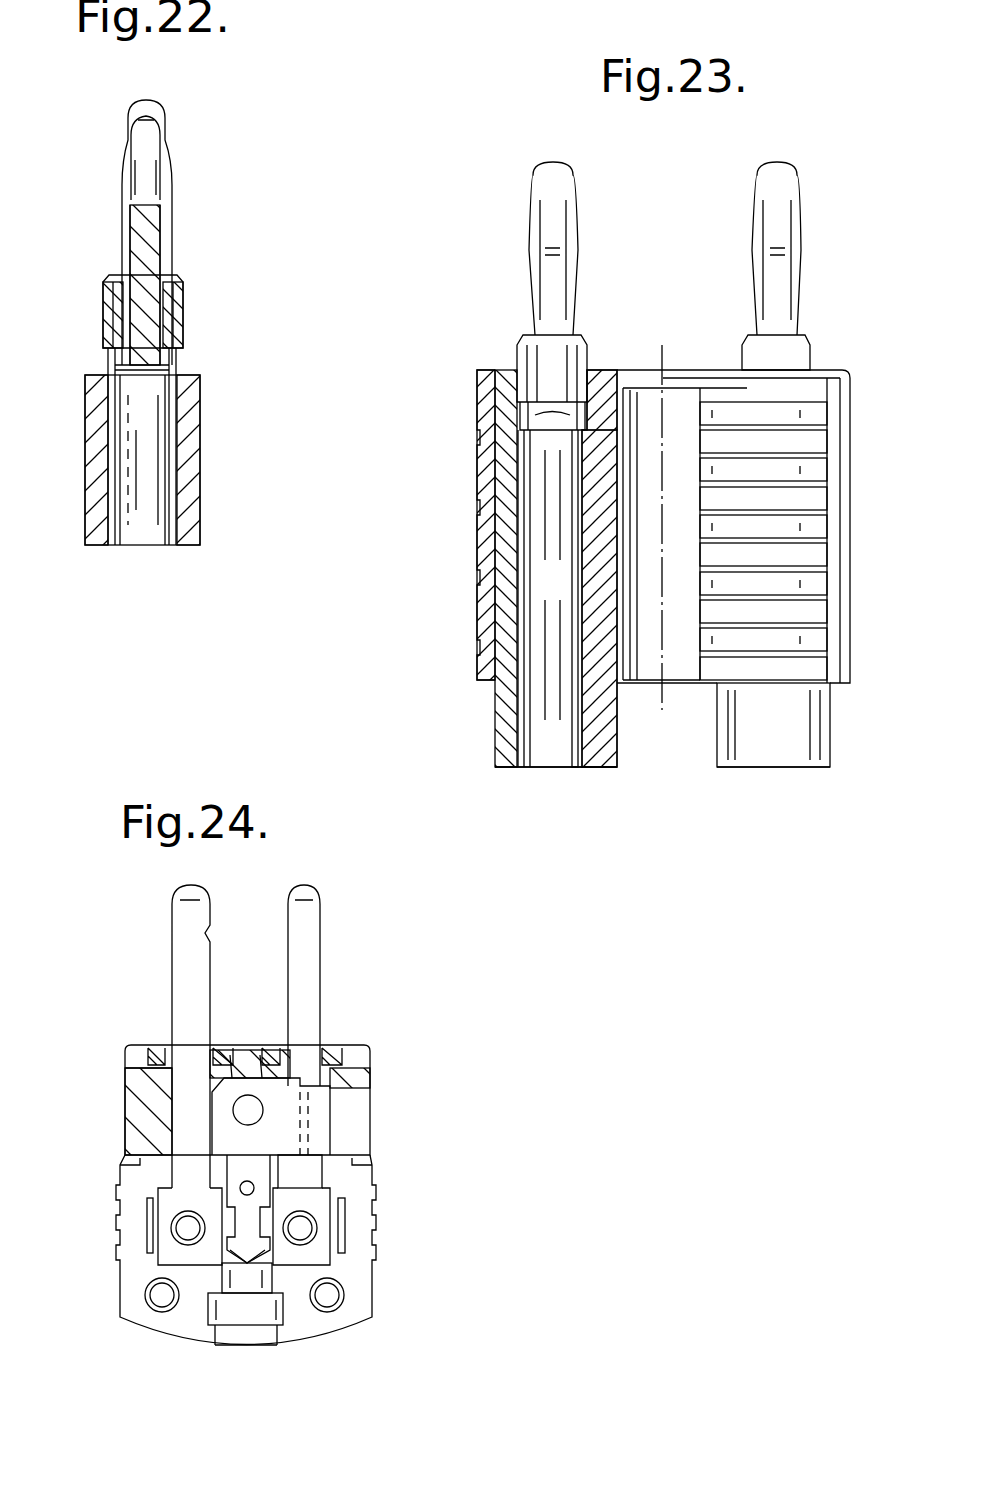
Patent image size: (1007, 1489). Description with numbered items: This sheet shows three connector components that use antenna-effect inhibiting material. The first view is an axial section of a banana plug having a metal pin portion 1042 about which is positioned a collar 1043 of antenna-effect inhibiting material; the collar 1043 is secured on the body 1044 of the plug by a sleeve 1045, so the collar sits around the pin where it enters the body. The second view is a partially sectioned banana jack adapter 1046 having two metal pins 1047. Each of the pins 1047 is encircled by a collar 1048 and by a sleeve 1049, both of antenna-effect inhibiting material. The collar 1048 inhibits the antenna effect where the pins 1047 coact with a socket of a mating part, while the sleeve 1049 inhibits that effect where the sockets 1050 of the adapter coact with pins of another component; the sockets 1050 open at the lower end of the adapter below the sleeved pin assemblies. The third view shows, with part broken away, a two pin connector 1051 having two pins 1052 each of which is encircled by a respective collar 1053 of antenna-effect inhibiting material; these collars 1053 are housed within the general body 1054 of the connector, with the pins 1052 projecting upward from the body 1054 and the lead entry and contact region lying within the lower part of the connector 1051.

In FIG. 22, the metal pin portion 1042 is at (166, 240).
In FIG. 22, the collar 1043 is at (178, 311).
In FIG. 22, the body 1044 is at (186, 456).
In FIG. 22, the sleeve 1045 is at (178, 361).
In FIG. 23, the banana jack adapter 1046 is at (474, 518).
In FIG. 23, the metal pins 1047 is at (772, 197).
In FIG. 23, the collar 1048 is at (582, 357).
In FIG. 23, the sleeve 1049 is at (500, 735).
In FIG. 23, the sockets 1050 is at (747, 780).
In FIG. 24, the two pin connector 1051 is at (378, 1198).
In FIG. 24, the pins 1052 is at (298, 965).
In FIG. 24, the collar 1053 is at (157, 1046).
In FIG. 24, the general body 1054 is at (147, 1113).